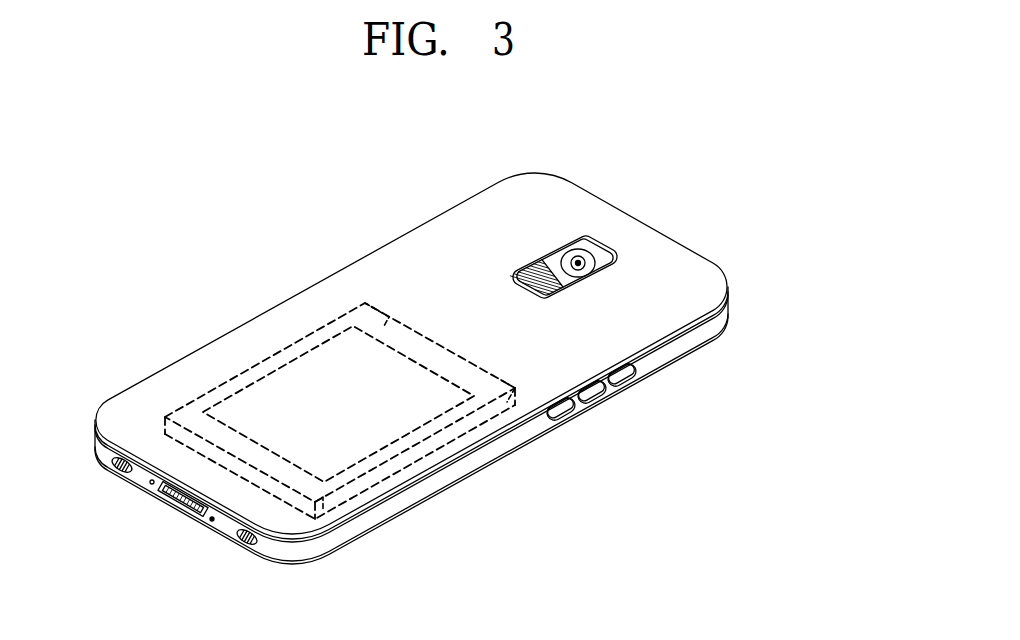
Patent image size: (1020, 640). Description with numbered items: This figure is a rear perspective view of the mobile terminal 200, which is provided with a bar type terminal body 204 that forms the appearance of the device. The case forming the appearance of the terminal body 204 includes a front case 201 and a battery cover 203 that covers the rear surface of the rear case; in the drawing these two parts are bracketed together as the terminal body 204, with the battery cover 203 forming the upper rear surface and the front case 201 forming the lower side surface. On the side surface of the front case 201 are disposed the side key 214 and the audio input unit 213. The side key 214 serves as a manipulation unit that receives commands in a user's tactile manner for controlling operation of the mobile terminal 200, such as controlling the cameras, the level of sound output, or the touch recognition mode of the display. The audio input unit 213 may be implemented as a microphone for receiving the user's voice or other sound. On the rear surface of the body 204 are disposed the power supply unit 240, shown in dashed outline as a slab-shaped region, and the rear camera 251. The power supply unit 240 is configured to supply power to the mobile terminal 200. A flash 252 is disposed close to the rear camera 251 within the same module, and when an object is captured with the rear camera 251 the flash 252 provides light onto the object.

The mobile terminal 200 is at (285, 237).
The front case 201 is at (729, 314).
The battery cover 203 is at (729, 291).
The terminal body 204 is at (812, 275).
The audio input unit 213 is at (210, 521).
The side key 214 is at (593, 393).
The power supply unit 240 is at (282, 360).
The rear camera 251 is at (574, 260).
The flash 252 is at (527, 268).